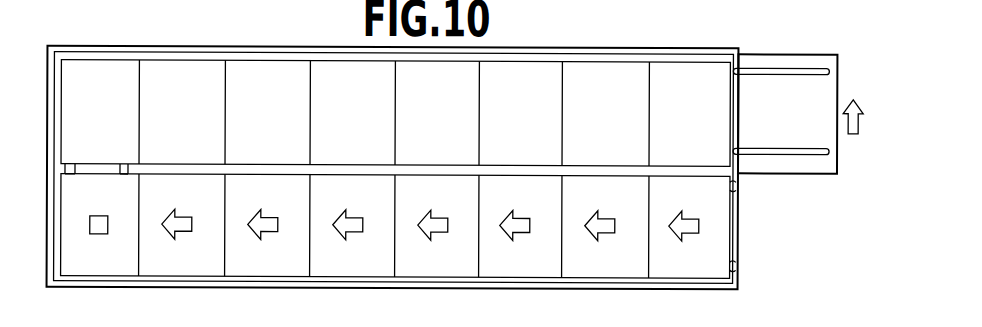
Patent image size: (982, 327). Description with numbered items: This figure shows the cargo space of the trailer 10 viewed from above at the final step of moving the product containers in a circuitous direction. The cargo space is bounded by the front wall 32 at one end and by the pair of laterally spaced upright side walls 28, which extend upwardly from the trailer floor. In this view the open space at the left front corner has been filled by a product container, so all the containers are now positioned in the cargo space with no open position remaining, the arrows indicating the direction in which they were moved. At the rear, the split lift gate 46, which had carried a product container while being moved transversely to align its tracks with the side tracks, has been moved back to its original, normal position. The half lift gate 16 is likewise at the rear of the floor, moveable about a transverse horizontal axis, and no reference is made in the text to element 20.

The trailer 10 is at (193, 44).
The half lift gate 16 is at (826, 162).
The upper module 20 is at (677, 7).
The side walls 28 is at (603, 50).
The front wall 32 is at (47, 113).
The split lift gate 46 is at (803, 76).